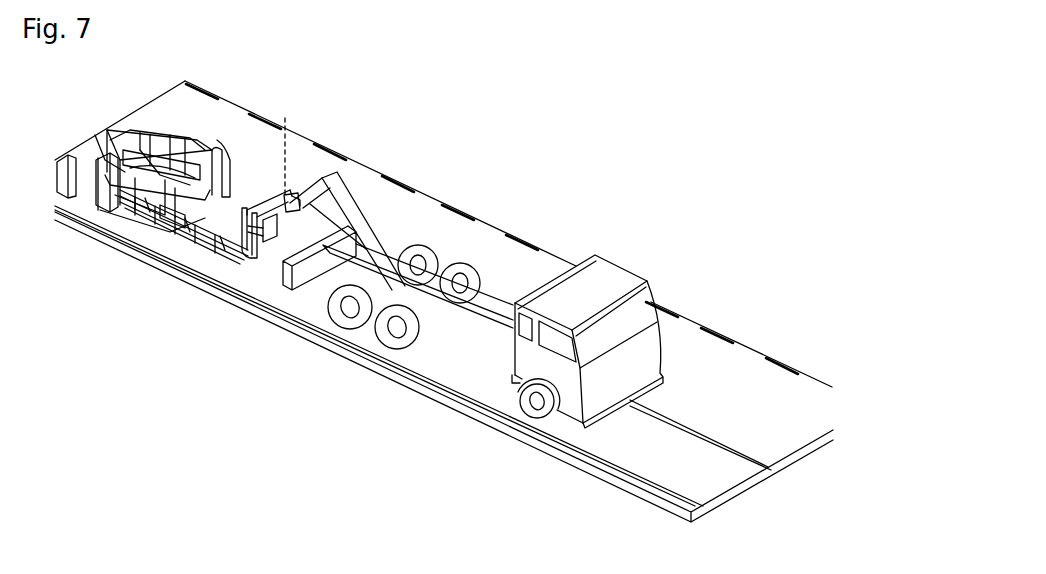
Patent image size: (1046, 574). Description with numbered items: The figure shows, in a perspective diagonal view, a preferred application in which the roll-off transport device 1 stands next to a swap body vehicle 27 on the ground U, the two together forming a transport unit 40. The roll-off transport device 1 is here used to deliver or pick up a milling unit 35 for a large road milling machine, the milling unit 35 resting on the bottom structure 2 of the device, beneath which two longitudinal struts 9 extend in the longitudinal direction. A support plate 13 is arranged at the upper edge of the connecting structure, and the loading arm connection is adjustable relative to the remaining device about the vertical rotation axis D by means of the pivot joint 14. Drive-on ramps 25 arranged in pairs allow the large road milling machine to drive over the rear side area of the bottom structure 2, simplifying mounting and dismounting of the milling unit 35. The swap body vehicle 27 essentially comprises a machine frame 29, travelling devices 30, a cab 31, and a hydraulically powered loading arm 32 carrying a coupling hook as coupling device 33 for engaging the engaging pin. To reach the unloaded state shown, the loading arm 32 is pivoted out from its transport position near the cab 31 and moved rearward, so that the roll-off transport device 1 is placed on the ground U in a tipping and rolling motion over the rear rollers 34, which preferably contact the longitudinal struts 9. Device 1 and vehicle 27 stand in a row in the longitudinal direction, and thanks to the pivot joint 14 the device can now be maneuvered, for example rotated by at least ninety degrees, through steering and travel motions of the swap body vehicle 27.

The roll-off transport device 1 is at (205, 114).
The bottom structure 2 is at (210, 238).
The longitudinal struts 9 is at (231, 247).
The support plate 13 is at (270, 232).
The pivot joint 14 is at (294, 197).
The drive-on ramps 25 is at (102, 204).
The swap body vehicle 27 is at (503, 268).
The machine frame 29 is at (482, 343).
The travelling devices 30 is at (410, 333).
The cab 31 is at (620, 330).
The loading arm 32 is at (350, 213).
The coupling device 33 is at (296, 200).
The rear rollers 34 is at (327, 250).
The milling unit 35 is at (172, 230).
The transport unit 40 is at (574, 124).
The vertical rotation axis D is at (284, 144).
The ground U is at (602, 472).